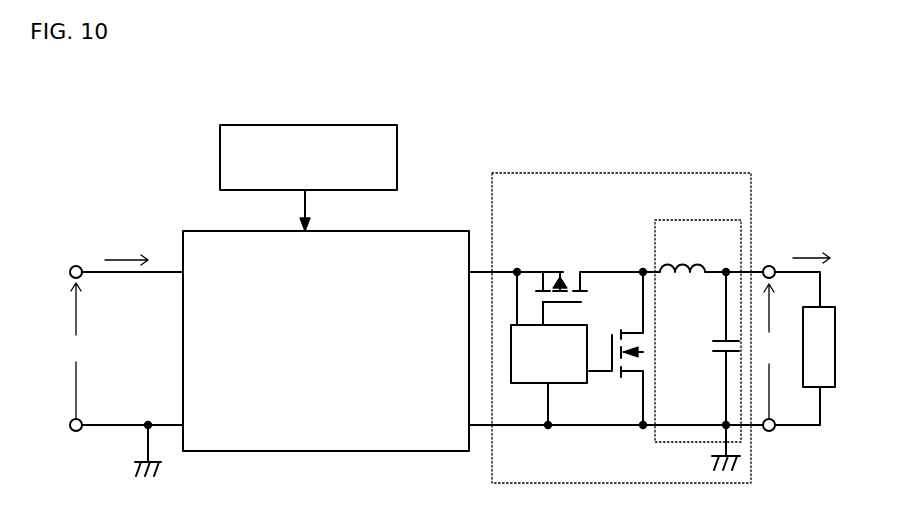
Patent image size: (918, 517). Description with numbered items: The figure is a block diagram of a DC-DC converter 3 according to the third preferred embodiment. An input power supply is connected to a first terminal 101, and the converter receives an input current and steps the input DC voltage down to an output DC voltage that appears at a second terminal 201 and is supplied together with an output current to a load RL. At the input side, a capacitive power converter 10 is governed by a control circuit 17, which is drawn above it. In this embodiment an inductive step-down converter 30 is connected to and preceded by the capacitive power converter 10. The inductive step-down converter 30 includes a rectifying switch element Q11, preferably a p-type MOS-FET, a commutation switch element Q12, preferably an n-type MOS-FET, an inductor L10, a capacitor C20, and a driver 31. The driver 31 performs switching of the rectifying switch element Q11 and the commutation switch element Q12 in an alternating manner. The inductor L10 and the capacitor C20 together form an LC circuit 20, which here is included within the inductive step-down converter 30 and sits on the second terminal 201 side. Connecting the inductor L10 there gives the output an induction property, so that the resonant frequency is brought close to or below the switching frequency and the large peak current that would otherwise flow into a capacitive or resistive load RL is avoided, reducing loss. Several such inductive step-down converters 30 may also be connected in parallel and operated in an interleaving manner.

The DC-DC converter 3 is at (132, 94).
The control circuit 17 is at (397, 125).
The capacitive power converter 10 is at (427, 231).
The inductive step-down converter 30 is at (629, 172).
The LC circuit 20 is at (700, 218).
The driver 31 is at (573, 384).
The first terminal 101 is at (77, 332).
The second terminal 201 is at (772, 334).
The rectifying switch element Q11 is at (561, 274).
The commutation switch element Q12 is at (616, 348).
The inductor L10 is at (684, 255).
The capacitor C20 is at (709, 348).
The load RL is at (835, 307).